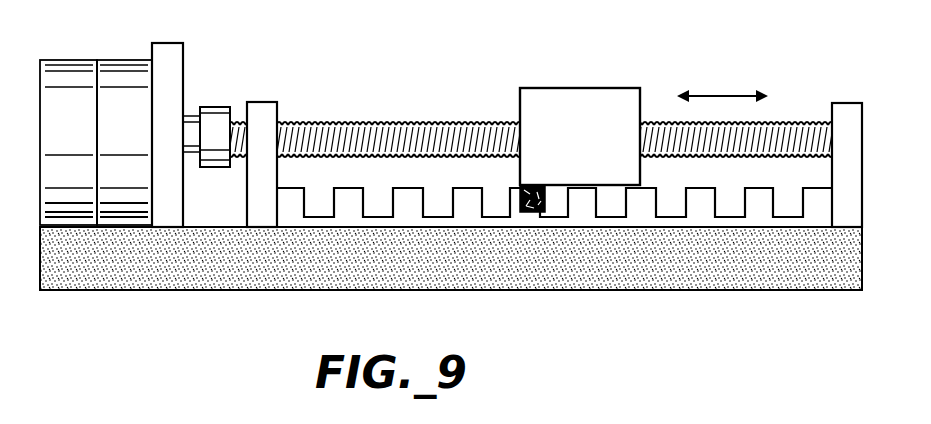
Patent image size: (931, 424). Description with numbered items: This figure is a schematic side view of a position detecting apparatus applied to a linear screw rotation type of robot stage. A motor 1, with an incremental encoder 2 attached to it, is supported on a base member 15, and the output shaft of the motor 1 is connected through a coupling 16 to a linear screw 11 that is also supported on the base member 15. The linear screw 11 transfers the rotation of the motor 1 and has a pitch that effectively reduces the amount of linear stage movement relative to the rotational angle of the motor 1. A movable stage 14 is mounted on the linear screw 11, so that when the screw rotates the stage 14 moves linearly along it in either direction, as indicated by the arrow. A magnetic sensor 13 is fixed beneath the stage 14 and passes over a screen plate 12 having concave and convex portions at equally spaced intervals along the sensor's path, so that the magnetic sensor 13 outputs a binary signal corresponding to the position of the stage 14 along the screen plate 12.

The motor 1 is at (122, 75).
The incremental encoder 2 is at (65, 75).
The linear screw 11 is at (302, 122).
The screen plate 12 is at (468, 197).
The magnetic sensor 13 is at (547, 190).
The stage 14 is at (613, 97).
The base member 15 is at (698, 278).
The coupling 16 is at (213, 113).